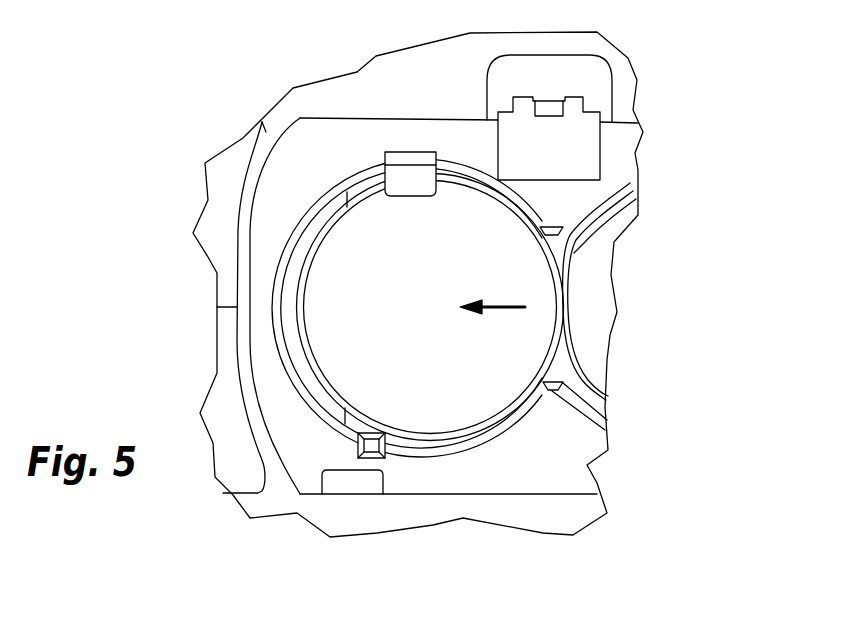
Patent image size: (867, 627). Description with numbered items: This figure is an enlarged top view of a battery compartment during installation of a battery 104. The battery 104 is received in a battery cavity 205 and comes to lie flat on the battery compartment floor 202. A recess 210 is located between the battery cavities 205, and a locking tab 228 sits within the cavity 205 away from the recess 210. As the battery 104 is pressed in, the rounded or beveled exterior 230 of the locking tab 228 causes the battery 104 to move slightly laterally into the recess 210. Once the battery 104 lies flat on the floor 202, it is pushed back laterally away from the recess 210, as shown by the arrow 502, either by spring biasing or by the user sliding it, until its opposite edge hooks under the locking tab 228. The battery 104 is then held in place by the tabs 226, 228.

The battery 104 is at (383, 243).
The battery compartment floor 202 is at (297, 262).
The battery cavity 205 is at (333, 196).
The recess 210 is at (580, 249).
The tab 226 is at (420, 188).
The locking tab 228 is at (358, 445).
The rounded or beveled exterior 230 is at (386, 452).
The arrow 502 is at (505, 309).